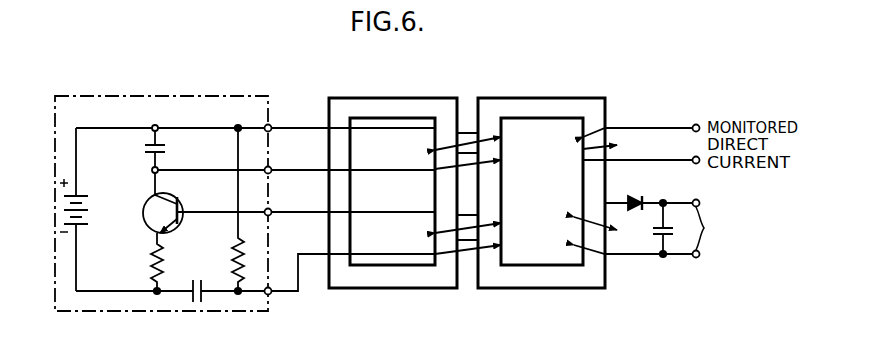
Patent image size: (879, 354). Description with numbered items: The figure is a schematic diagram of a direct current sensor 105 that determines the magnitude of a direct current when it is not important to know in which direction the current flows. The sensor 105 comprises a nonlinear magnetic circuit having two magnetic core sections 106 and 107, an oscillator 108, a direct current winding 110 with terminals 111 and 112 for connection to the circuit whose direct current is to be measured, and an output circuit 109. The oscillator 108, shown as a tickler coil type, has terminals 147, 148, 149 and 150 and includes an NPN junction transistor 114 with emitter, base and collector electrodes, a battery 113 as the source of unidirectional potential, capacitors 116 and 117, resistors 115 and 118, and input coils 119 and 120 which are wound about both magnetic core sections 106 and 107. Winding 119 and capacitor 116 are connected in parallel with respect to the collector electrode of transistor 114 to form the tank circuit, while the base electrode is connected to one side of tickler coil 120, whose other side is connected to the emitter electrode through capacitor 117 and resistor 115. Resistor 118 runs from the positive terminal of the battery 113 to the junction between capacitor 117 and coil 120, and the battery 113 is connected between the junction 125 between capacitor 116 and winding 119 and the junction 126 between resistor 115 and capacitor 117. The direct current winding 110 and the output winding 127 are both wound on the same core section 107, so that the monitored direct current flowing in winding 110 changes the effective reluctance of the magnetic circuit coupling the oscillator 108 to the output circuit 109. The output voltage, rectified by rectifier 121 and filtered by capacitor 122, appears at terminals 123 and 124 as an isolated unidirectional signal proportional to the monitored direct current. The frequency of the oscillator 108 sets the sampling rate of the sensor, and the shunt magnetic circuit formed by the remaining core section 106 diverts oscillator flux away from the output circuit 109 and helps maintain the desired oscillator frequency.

The direct current sensor 105 is at (512, 175).
The magnetic core section 106 is at (400, 97).
The magnetic core section 107 is at (561, 97).
The oscillator 108 is at (126, 96).
The output circuit 109 is at (689, 232).
The direct current winding 110 is at (582, 155).
The terminal 111 is at (694, 124).
The terminal 112 is at (694, 156).
The battery 113 is at (86, 209).
The transistor 114 is at (144, 220).
The resistor 115 is at (150, 262).
The capacitor 116 is at (146, 150).
The capacitor 117 is at (197, 303).
The resistor 118 is at (234, 248).
The input coil 119 is at (432, 150).
The tickler coil 120 is at (432, 233).
The rectifier 121 is at (633, 191).
The capacitor 122 is at (653, 231).
The terminal 123 is at (694, 200).
The terminal 124 is at (696, 258).
The junction 125 is at (159, 127).
The junction 126 is at (156, 294).
The output winding 127 is at (575, 217).
The terminal 147 is at (271, 126).
The terminal 148 is at (271, 168).
The terminal 149 is at (271, 209).
The terminal 150 is at (269, 295).